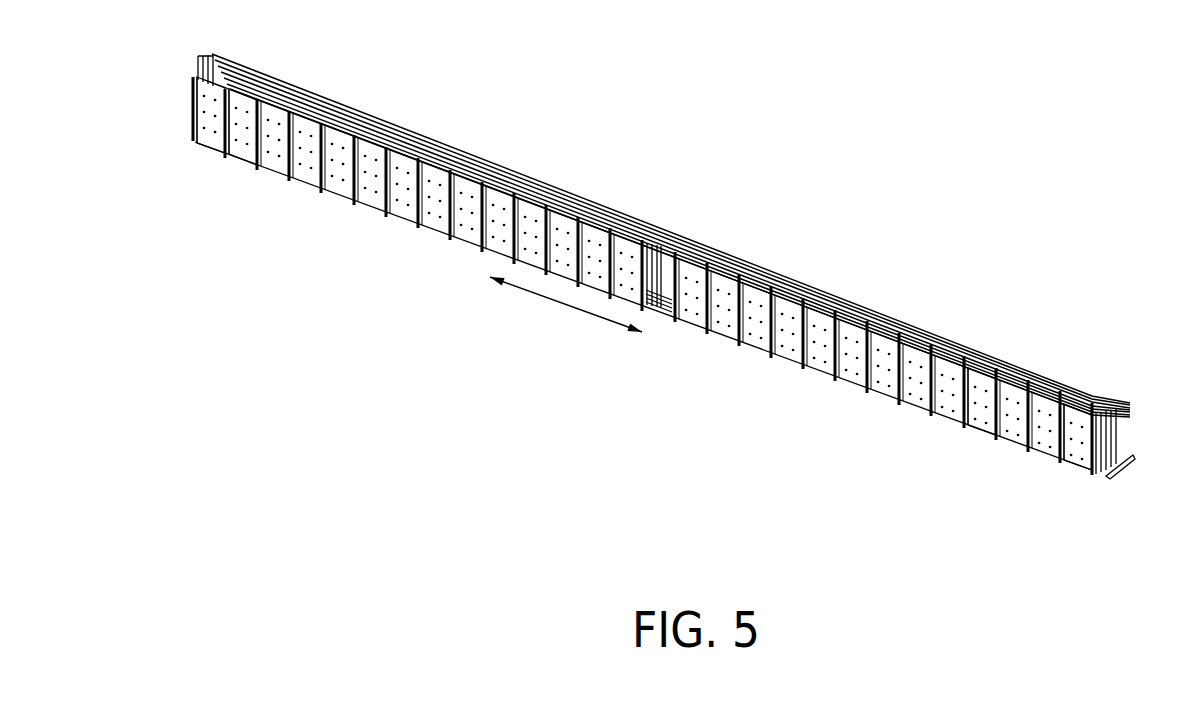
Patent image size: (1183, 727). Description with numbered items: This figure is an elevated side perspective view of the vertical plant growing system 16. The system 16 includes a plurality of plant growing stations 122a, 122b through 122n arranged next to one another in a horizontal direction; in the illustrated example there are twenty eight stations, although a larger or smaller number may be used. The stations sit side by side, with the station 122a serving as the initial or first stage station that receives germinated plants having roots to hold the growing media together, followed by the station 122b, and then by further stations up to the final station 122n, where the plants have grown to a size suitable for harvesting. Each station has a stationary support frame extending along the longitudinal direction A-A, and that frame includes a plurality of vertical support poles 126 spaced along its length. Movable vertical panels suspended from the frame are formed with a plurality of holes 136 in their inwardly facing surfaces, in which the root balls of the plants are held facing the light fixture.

The vertical plant growing system 16 is at (692, 182).
The initial plant growing station 122a is at (206, 143).
The second plant growing station 122b is at (257, 80).
The final plant growing station 122n is at (1093, 394).
The vertical support pole 126 is at (253, 156).
The hole 136 is at (978, 428).